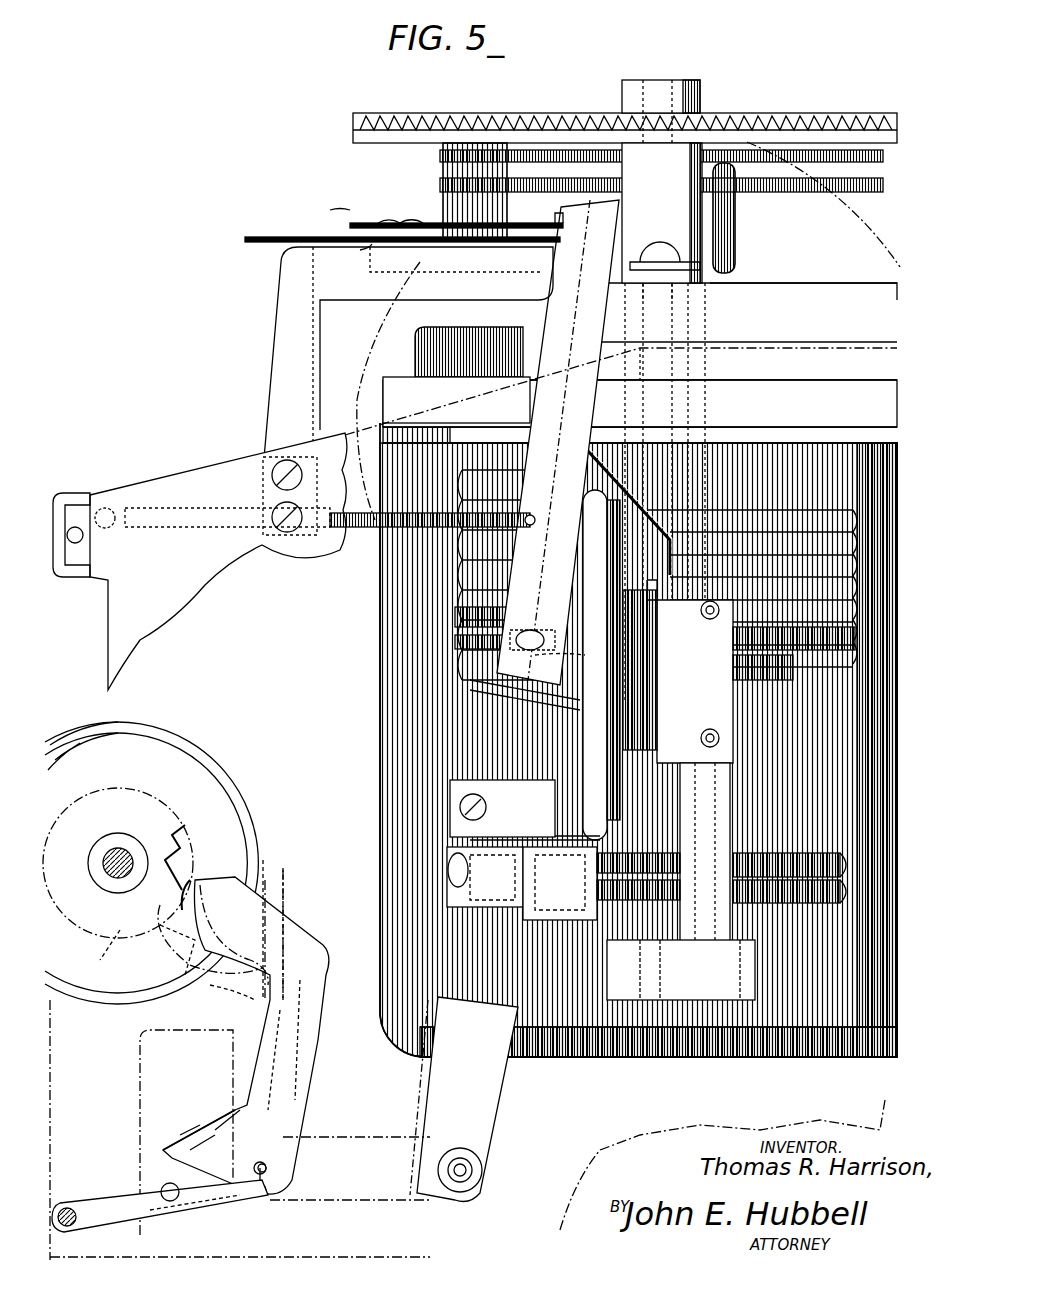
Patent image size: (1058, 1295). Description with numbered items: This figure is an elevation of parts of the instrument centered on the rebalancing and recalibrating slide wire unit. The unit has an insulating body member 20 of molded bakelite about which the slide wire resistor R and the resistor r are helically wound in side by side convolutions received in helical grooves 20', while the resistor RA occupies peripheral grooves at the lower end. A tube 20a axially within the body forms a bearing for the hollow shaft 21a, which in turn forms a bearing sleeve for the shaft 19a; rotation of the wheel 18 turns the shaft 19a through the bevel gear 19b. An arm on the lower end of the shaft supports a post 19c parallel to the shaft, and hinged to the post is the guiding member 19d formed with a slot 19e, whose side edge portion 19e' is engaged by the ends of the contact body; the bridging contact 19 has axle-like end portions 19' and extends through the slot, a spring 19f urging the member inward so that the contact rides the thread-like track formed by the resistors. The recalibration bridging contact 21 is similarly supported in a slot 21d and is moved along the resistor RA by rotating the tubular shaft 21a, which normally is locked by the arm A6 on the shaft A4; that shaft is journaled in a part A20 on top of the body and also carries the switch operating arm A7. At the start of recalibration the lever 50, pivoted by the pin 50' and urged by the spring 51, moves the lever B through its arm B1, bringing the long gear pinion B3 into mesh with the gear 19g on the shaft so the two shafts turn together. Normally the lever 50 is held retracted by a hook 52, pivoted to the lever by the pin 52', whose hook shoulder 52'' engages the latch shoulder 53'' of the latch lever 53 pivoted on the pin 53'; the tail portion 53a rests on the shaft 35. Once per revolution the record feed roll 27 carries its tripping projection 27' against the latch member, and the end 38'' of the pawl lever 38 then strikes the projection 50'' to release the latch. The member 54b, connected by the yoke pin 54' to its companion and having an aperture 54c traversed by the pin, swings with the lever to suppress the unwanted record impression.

The wheel 18 is at (388, 334).
The bridging contact 19 is at (529, 635).
The axle-like end portions 19' is at (544, 659).
The shaft 19a is at (655, 80).
The bevel gear 19b is at (425, 112).
The post 19c is at (681, 881).
The bridging contact supporting and guiding member 19d is at (610, 470).
The slot 19e is at (582, 633).
The bracket arm 19e' is at (527, 638).
The spring 19f is at (665, 670).
The gear 19g is at (443, 162).
The body member 20 is at (638, 670).
The helical grooves 20' is at (450, 596).
The tube 20a is at (700, 300).
The recalibration bridging contact 21 is at (447, 882).
The hollow shaft 21a is at (720, 346).
The slot 21d is at (450, 866).
The record feed roll 27 is at (150, 850).
The tripping projection 27' is at (193, 854).
The shaft 35 is at (170, 1202).
The pawl lever 38 is at (240, 1065).
The end of pawl lever 38'' is at (300, 915).
The lever 50 is at (514, 700).
The pivot pin 50' is at (504, 1174).
The projection 50'' is at (509, 938).
The spring 51 is at (350, 545).
The hook member 52 is at (214, 1035).
The pivot pin 52' is at (265, 1207).
The hook shoulder 52'' is at (215, 875).
The latch lever 53 is at (221, 995).
The pivot pin 53' is at (302, 1174).
The latch shoulder 53'' is at (223, 992).
The tail portion 53a is at (170, 1140).
The yoke pin 54' is at (75, 1189).
The lever member 54b is at (112, 1200).
The aperture 54c is at (195, 1224).
The shaft A4 is at (700, 258).
The arm A6 is at (732, 232).
The switch operating arm A7 is at (327, 210).
The part A20 is at (768, 283).
The lever B is at (365, 250).
The arm of lever B B1 is at (342, 240).
The long gear pinion B3 is at (558, 222).
The slide wire resistor R is at (460, 616).
The resistor r is at (500, 642).
The resistor RA is at (850, 870).